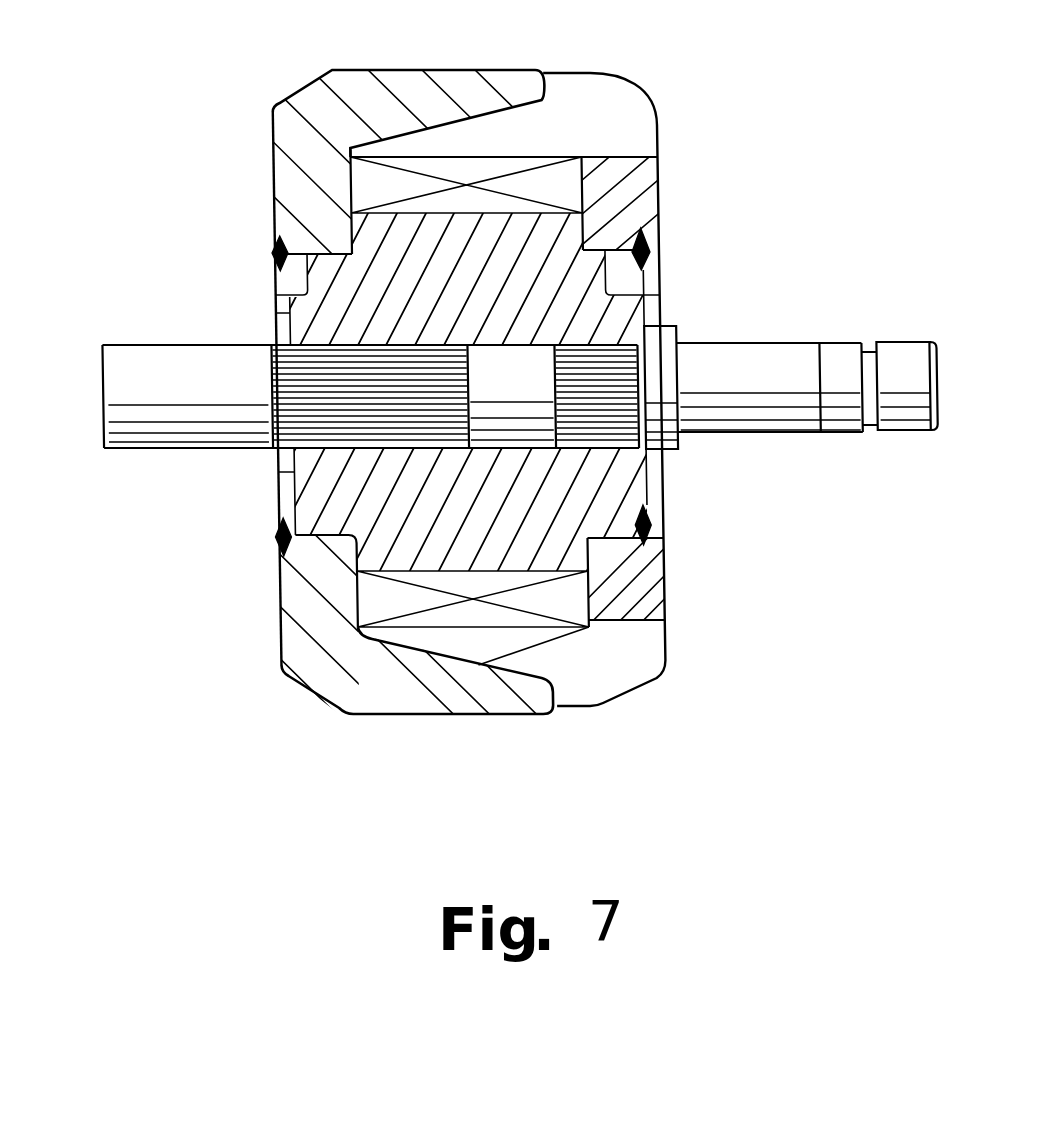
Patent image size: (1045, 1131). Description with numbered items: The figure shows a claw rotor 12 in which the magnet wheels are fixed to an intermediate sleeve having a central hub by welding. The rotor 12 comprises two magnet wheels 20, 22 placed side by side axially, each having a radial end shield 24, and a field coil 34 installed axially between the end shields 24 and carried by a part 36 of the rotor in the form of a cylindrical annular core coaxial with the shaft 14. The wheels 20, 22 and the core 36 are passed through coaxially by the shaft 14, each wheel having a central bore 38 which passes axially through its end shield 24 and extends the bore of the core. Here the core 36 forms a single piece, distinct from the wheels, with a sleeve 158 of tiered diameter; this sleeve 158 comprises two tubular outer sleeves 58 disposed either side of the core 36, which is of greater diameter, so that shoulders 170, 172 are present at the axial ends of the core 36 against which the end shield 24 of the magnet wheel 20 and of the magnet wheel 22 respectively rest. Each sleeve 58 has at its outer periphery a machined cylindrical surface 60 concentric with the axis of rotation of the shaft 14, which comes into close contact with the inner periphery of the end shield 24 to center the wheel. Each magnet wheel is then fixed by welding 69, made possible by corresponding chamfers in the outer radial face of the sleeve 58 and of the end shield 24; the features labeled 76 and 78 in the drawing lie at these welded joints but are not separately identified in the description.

The claw rotor 12 is at (615, 376).
The shaft 14 is at (492, 360).
The magnet wheel 20 is at (405, 354).
The magnet wheel 22 is at (672, 631).
The radial end shield 24 is at (468, 203).
The field coil 34 is at (491, 108).
The core 36 is at (448, 520).
The central bore 38 is at (450, 392).
The tubular outer sleeve 58 is at (310, 500).
The cylindrical surface 60 is at (416, 688).
The welding 69 is at (522, 257).
The seal 76 is at (480, 530).
The seal seat 78 is at (708, 612).
The sleeve 158 is at (394, 560).
The shoulder 170 is at (440, 600).
The shoulder 172 is at (598, 243).